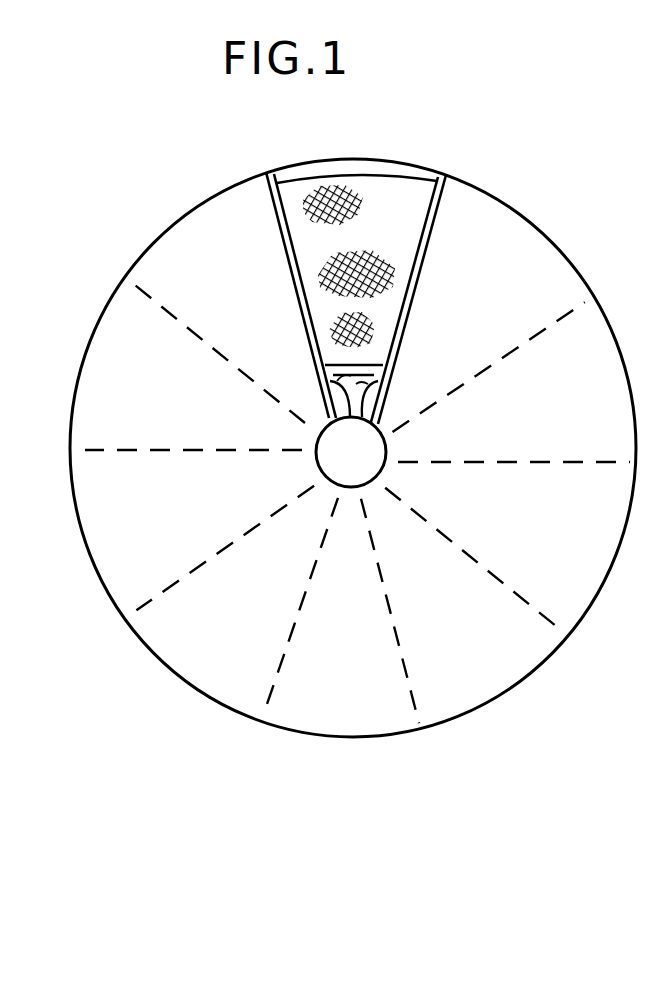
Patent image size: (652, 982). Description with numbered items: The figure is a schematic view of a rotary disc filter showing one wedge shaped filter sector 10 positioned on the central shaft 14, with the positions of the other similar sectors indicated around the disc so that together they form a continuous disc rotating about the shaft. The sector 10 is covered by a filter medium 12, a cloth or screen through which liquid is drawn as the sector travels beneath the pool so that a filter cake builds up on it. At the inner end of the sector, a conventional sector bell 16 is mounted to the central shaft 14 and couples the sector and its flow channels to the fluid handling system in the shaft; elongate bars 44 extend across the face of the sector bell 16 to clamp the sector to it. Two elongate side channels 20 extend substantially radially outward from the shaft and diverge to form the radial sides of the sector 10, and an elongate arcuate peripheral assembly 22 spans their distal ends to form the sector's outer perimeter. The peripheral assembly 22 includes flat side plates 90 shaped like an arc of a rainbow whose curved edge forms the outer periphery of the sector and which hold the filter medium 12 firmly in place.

The filter sector 10 is at (424, 163).
The filter medium 12 is at (397, 243).
The central shaft 14 is at (363, 458).
The sector bell 16 is at (387, 387).
The side channels 20 is at (413, 281).
The peripheral assembly 22 is at (311, 164).
The elongate bars 44 is at (327, 390).
The flat side plates 90 is at (384, 164).